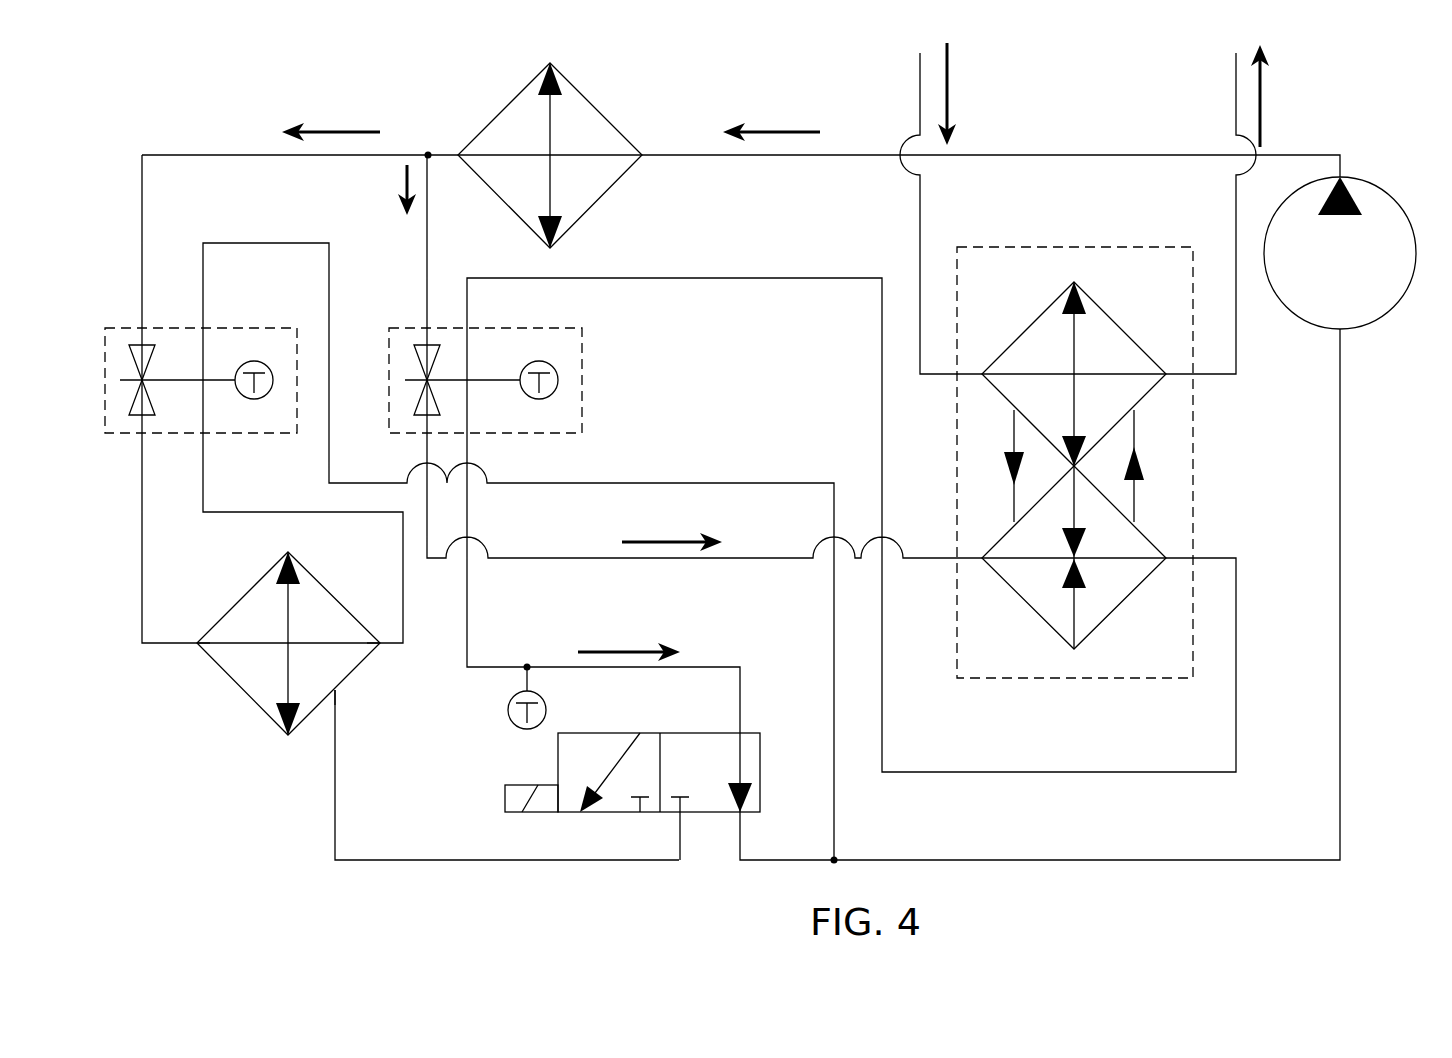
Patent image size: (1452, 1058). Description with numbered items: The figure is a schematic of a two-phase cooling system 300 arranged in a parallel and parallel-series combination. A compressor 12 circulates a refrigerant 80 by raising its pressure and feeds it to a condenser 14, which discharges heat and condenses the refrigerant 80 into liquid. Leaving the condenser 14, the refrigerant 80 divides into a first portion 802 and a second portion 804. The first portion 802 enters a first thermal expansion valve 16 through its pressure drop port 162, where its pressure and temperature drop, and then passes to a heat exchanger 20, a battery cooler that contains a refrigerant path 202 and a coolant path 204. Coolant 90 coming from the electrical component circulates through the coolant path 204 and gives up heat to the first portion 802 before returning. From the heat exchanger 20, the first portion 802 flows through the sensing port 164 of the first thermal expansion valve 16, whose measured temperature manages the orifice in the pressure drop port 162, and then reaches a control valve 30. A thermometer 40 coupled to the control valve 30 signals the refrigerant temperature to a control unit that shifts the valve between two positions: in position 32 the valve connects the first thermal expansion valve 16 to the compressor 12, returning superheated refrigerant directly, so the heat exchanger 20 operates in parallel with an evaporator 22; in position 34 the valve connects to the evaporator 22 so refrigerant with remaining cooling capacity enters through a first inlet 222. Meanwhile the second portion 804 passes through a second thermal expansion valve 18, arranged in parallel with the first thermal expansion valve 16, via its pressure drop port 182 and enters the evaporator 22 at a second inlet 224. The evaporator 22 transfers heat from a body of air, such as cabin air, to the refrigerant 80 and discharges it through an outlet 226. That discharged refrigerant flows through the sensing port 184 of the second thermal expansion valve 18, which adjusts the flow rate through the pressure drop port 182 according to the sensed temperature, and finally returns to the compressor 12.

The compressor 12 is at (1393, 195).
The condenser 14 is at (597, 105).
The first thermal expansion valve 16 is at (497, 355).
The pressure drop port 162 is at (408, 362).
The sensing port 164 is at (490, 408).
The second thermal expansion valve 18 is at (177, 350).
The pressure drop port 182 is at (123, 407).
The sensing port 184 is at (224, 352).
The heat exchanger 20 is at (1206, 454).
The refrigerant path 202 is at (1125, 604).
The coolant path 204 is at (1118, 324).
The evaporator 22 is at (220, 707).
The first inlet 222 is at (335, 690).
The second inlet 224 is at (197, 645).
The outlet 226 is at (380, 645).
The control valve 30 is at (650, 822).
The position 32 is at (708, 812).
The position 34 is at (603, 812).
The thermometer 40 is at (547, 712).
The refrigerant 80 is at (790, 132).
The first portion 802 is at (405, 176).
The second portion 804 is at (343, 132).
The coolant 90 is at (947, 73).
The two-phase cooling system 300 is at (1043, 905).